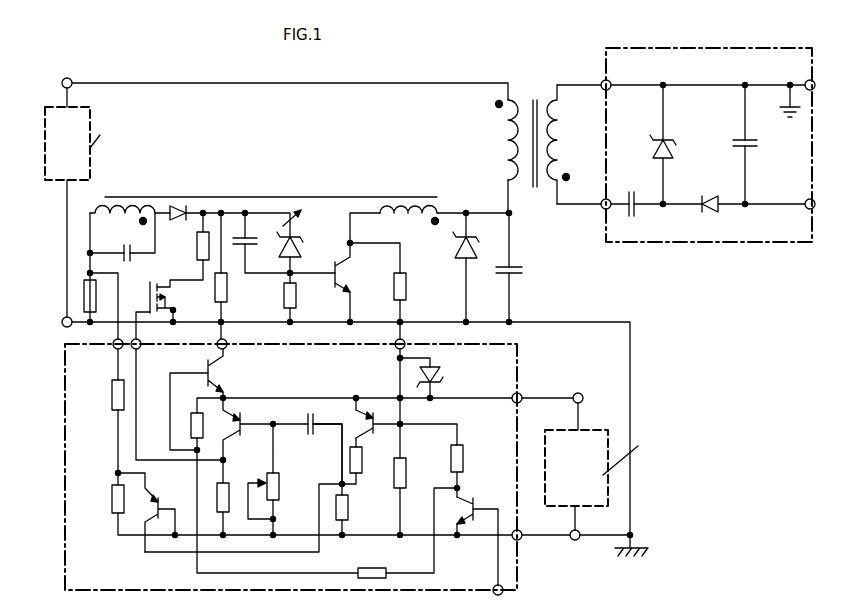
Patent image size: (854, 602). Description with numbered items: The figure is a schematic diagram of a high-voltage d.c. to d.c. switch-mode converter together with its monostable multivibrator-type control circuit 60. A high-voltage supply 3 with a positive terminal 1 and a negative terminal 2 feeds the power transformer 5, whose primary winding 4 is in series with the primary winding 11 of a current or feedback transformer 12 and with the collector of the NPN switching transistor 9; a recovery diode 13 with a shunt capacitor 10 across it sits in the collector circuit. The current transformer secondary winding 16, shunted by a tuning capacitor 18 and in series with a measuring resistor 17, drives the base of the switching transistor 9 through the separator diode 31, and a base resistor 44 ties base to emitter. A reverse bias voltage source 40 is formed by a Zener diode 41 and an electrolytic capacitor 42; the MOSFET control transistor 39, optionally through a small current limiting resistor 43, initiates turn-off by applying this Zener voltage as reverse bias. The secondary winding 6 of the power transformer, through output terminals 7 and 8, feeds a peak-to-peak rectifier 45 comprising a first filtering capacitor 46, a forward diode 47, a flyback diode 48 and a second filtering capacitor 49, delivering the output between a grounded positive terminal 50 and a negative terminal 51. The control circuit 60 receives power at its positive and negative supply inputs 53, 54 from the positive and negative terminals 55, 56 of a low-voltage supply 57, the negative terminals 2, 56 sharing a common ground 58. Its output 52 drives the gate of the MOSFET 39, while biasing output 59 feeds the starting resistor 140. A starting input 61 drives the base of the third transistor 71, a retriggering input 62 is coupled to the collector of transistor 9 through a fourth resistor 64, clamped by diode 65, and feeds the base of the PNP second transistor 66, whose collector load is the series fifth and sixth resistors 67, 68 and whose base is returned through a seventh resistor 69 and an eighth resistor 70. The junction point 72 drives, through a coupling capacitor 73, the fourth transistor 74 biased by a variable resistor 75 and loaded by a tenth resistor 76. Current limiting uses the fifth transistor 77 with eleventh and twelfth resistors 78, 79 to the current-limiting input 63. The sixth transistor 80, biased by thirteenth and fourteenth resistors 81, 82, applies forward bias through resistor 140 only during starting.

The positive terminal of the high-voltage supply 1 is at (71, 79).
The negative terminal of the high-voltage supply 2 is at (64, 316).
The high-voltage supply 3 is at (92, 112).
The power transformer primary winding 4 is at (508, 146).
The power transformer 5 is at (530, 88).
The power transformer secondary winding 6 is at (560, 145).
The secondary winding output terminal 7 is at (602, 80).
The secondary winding output terminal 8 is at (602, 199).
The switching transistor 9 is at (352, 268).
The shunt capacitor 10 is at (520, 278).
The current transformer primary winding 11 is at (408, 220).
The current transformer 12 is at (324, 196).
The recovery diode 13 is at (476, 236).
The current transformer secondary winding 16 is at (100, 212).
The current measuring resistor 17 is at (96, 292).
The tuning capacitor 18 is at (120, 253).
The separator diode 31 is at (178, 222).
The control transistor 39 is at (176, 300).
The bias voltage source 40 is at (304, 217).
The Zener diode 41 is at (301, 243).
The electrolytic capacitor 42 is at (257, 246).
The current limiting resistor 43 is at (197, 250).
The base resistor 44 is at (296, 296).
The peak-to-peak rectifier 45 is at (645, 243).
The first filtering capacitor 46 is at (636, 210).
The first rectifier diode 47 is at (672, 148).
The second rectifier diode 48 is at (710, 196).
The second filtering capacitor 49 is at (735, 148).
The positive rectifier output terminal 50 is at (806, 80).
The negative rectifier output terminal 51 is at (806, 199).
The control circuit output 52 is at (141, 349).
The positive supply input 53 is at (513, 393).
The negative supply input 54 is at (520, 540).
The positive terminal of the low-voltage supply 55 is at (582, 393).
The negative terminal of the low-voltage supply 56 is at (573, 540).
The low-voltage d.c. supply source 57 is at (598, 428).
The common ground 58 is at (648, 548).
The biasing output 59 is at (227, 349).
The control circuit 60 is at (520, 346).
The starting input 61 is at (494, 585).
The retriggering input 62 is at (395, 349).
The current-limiting input 63 is at (113, 349).
The fourth resistor 64 is at (406, 290).
The clamping diode 65 is at (440, 375).
The second transistor 66 is at (355, 408).
The fifth resistor 67 is at (362, 460).
The sixth resistor 68 is at (354, 505).
The seventh resistor 69 is at (406, 474).
The eighth resistor 70 is at (463, 460).
The third transistor 71 is at (470, 496).
The junction point 72 is at (340, 476).
The coupling capacitor 73 is at (304, 436).
The fourth transistor 74 is at (236, 438).
The variable resistor 75 is at (279, 480).
The tenth resistor 76 is at (229, 496).
The fifth transistor 77 is at (150, 495).
The eleventh resistor 78 is at (112, 492).
The twelfth resistor 79 is at (112, 392).
The sixth transistor 80 is at (226, 378).
The thirteenth resistor 81 is at (191, 425).
The fourteenth resistor 82 is at (380, 568).
The starting resistor 140 is at (227, 285).